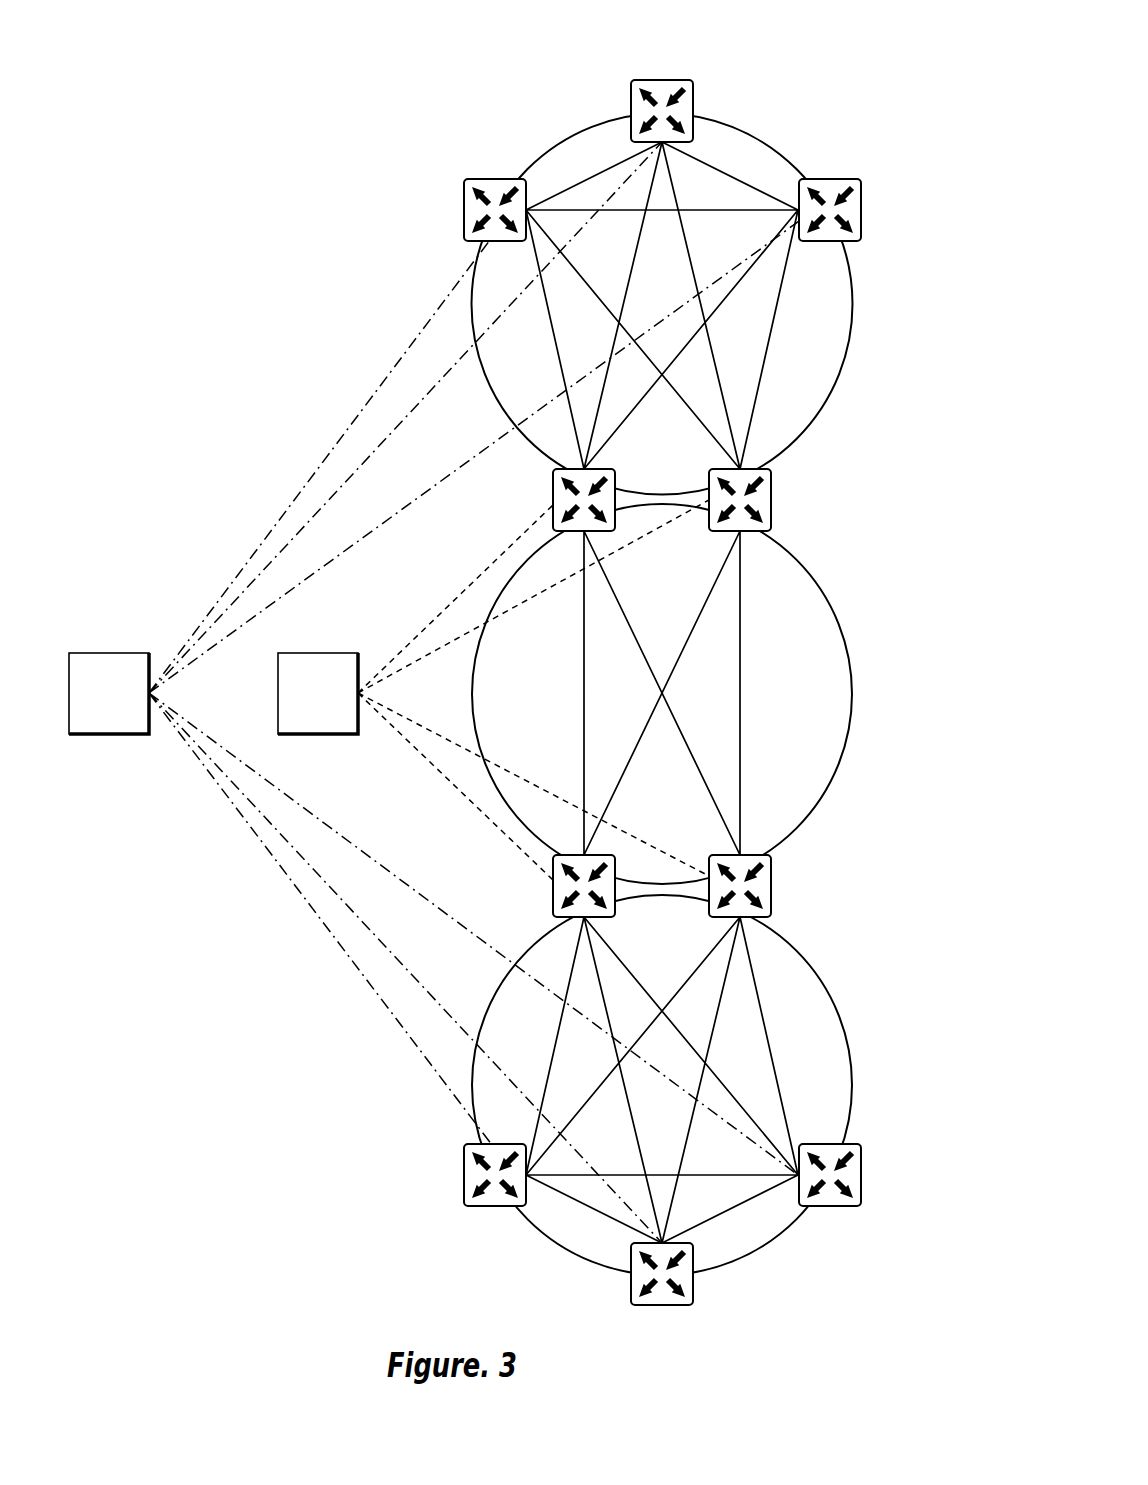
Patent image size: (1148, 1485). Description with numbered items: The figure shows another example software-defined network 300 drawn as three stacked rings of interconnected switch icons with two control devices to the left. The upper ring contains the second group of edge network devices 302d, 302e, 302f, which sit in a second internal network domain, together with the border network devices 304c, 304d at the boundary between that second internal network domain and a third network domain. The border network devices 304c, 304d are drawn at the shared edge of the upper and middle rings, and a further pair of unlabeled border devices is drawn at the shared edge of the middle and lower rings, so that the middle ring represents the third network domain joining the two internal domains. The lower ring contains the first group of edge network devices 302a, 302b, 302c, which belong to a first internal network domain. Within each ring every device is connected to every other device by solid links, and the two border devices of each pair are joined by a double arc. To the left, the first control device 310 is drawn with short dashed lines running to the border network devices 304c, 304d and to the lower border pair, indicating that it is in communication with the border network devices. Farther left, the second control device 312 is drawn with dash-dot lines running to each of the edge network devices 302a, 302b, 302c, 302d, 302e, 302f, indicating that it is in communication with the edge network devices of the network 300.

The software-defined network 300 is at (849, 58).
The edge network device 302a is at (463, 1202).
The edge network device 302b is at (693, 1288).
The edge network device 302c is at (861, 1202).
The edge network device 302d is at (463, 197).
The edge network device 302e is at (693, 97).
The edge network device 302f is at (861, 196).
The border network device 304c is at (772, 485).
The border network device 304d is at (553, 486).
The first control device 310 is at (333, 706).
The second control device 312 is at (124, 706).